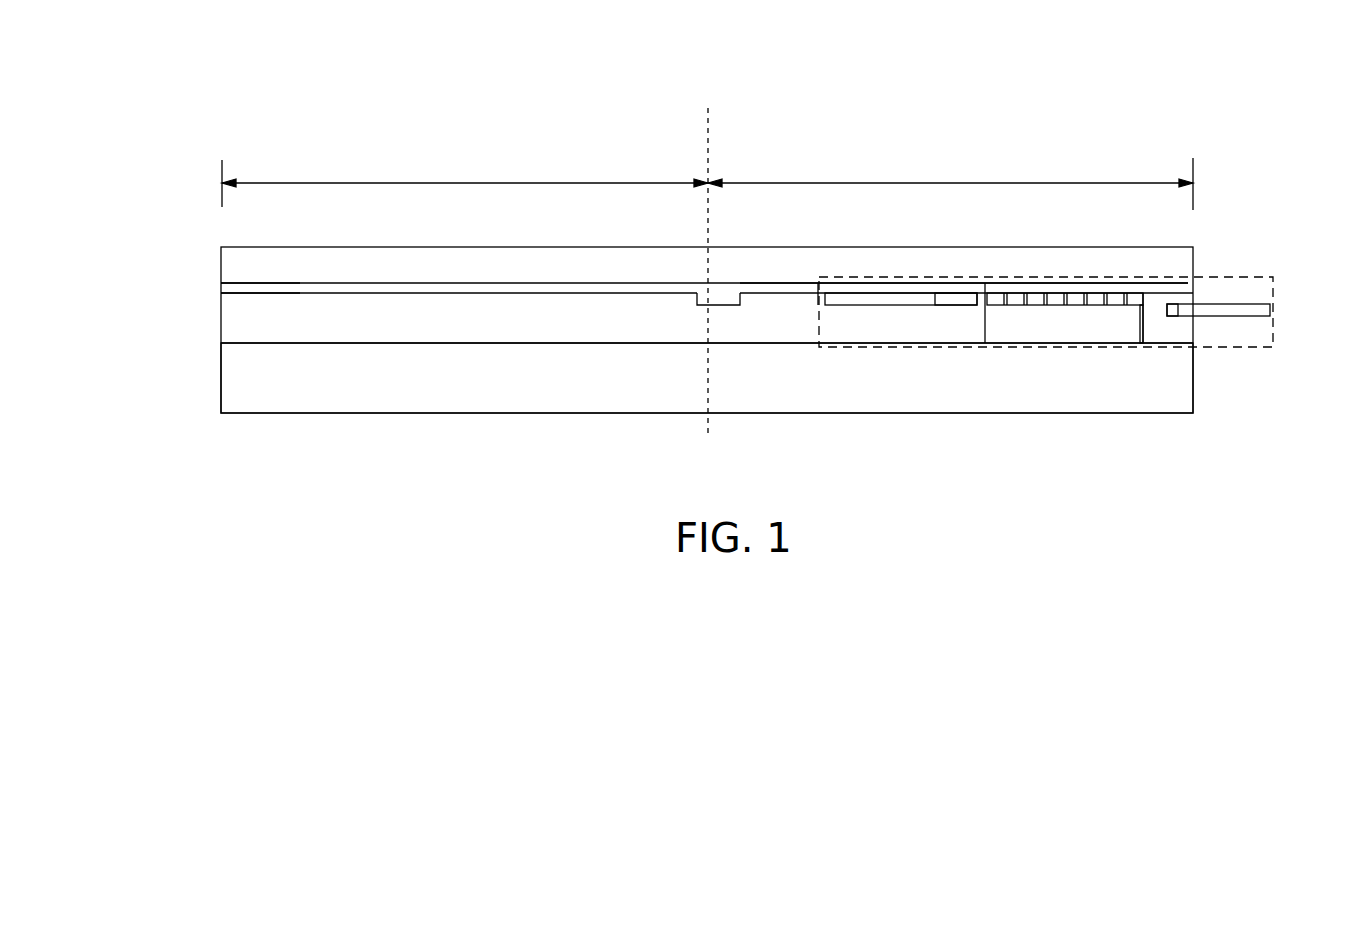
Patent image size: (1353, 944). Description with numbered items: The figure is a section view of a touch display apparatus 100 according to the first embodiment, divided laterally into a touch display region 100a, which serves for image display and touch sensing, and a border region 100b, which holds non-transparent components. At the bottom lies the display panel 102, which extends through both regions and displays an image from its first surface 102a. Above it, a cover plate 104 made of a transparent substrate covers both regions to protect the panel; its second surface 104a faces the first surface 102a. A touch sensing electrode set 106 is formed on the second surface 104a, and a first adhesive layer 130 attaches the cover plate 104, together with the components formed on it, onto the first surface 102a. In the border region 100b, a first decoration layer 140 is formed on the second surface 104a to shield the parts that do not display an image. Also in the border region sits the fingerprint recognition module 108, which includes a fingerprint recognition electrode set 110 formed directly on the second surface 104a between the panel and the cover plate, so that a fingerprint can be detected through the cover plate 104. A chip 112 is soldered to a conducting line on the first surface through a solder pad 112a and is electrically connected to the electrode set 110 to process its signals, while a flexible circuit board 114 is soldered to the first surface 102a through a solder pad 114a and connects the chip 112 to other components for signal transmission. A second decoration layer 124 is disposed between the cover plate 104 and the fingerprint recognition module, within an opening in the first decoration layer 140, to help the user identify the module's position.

The touch display apparatus 100 is at (1200, 111).
The touch display region 100a is at (465, 179).
The border region 100b is at (950, 180).
The display panel 102 is at (685, 393).
The first surface 102a is at (262, 343).
The cover plate 104 is at (1186, 260).
The second surface 104a is at (278, 283).
The touch sensing electrode set 106 is at (248, 291).
The fingerprint recognition module 108 is at (1278, 308).
The fingerprint recognition electrode set 110 is at (880, 305).
The chip 112 is at (1063, 330).
The connector terminal 112a is at (1133, 307).
The flexible circuit board 114 is at (1240, 316).
The solder pad 114a is at (1178, 316).
The second decoration layer 124 is at (935, 305).
The first adhesive layer 130 is at (578, 331).
The first decoration layer 140 is at (1190, 288).